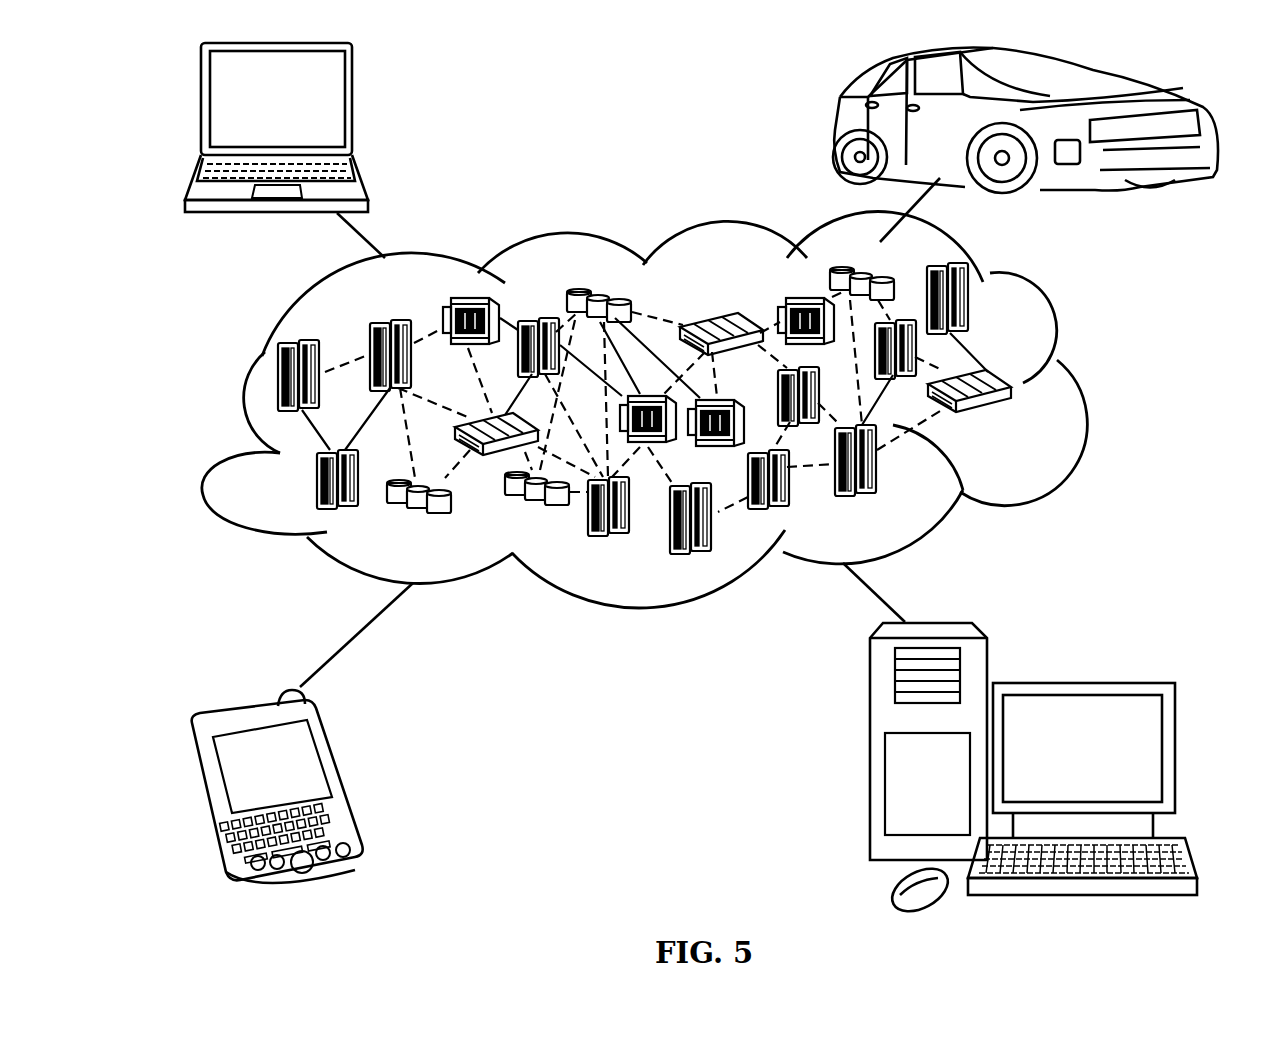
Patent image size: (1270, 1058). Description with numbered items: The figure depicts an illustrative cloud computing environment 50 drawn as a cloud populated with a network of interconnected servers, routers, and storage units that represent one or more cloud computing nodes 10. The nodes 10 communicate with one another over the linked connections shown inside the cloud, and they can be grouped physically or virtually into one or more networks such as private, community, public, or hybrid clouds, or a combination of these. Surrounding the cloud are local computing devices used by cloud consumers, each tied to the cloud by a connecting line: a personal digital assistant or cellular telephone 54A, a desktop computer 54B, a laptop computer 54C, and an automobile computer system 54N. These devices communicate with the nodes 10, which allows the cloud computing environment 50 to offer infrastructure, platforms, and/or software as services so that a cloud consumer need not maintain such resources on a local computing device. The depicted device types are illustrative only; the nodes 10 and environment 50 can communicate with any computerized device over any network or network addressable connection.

The cloud computing node 10 is at (1013, 417).
The cloud computing environment 50 is at (1078, 388).
The personal digital assistant or cellular telephone 54A is at (340, 778).
The desktop computer 54B is at (1078, 682).
The laptop computer 54C is at (353, 107).
The automobile computer system 54N is at (840, 127).